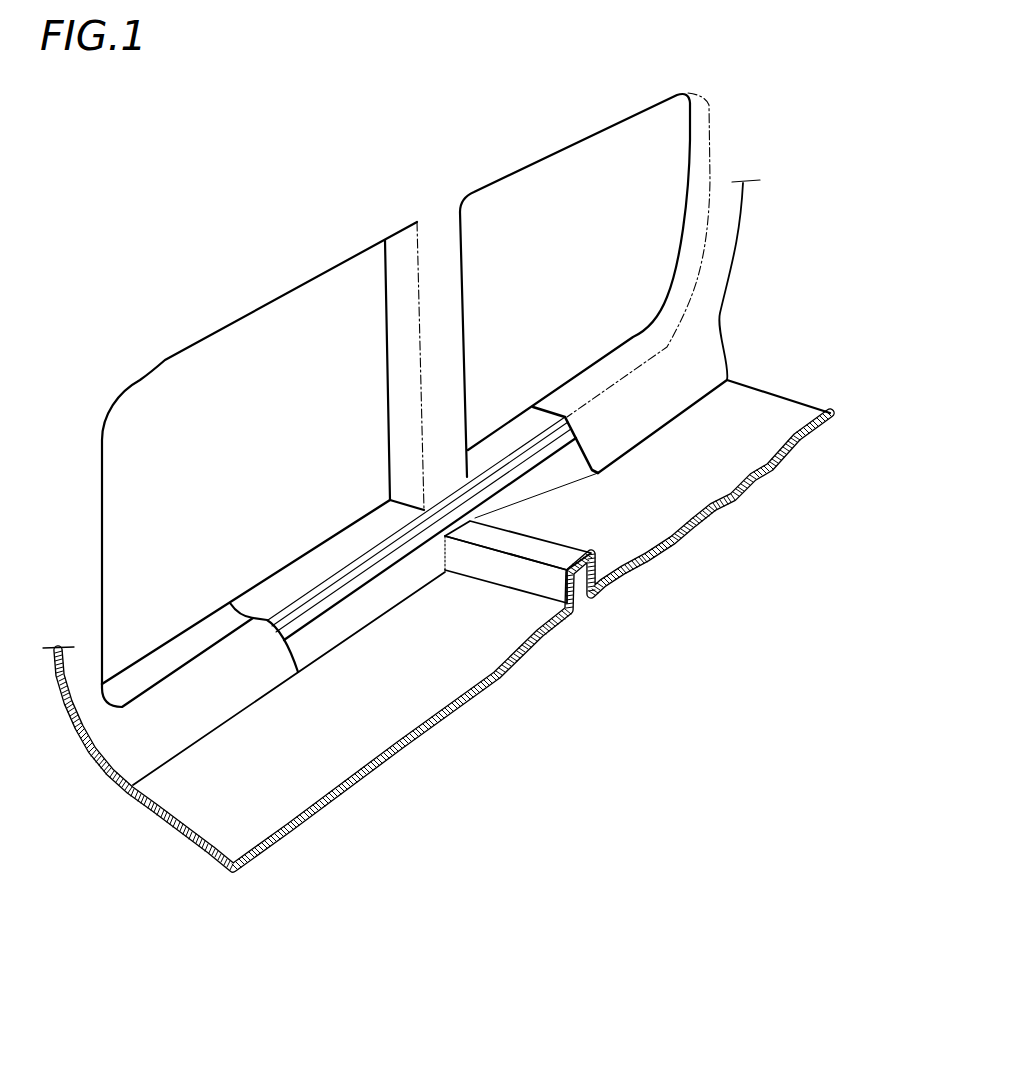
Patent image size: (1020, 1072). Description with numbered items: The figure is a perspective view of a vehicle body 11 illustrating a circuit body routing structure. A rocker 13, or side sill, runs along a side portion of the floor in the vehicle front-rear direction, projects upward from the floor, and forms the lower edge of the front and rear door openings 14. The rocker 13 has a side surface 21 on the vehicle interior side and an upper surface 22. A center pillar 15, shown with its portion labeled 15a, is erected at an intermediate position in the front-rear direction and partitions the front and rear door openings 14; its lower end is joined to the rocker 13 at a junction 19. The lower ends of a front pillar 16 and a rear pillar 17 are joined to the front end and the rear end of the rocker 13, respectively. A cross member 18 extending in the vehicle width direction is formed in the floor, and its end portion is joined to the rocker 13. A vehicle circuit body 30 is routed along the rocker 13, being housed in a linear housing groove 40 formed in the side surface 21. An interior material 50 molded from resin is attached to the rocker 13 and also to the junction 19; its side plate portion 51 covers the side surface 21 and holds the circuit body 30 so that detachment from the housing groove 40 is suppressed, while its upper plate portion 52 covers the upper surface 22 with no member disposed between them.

The vehicle body 11 is at (400, 800).
The rocker (side sill) 13 is at (367, 633).
The door openings 14 is at (515, 217).
The center pillar 15 is at (400, 290).
The side surface of seat back 15a is at (450, 382).
The front pillar 16 is at (106, 585).
The rear pillar 17 is at (720, 233).
The cross member 18 is at (530, 587).
The junction 19 is at (455, 477).
The side surface 21 is at (310, 655).
The upper surface 22 is at (275, 600).
The vehicle circuit body 30 is at (374, 540).
The housing groove 40 is at (410, 550).
The interior material 50 is at (690, 397).
The side plate portion 51 is at (240, 697).
The upper plate portion 52 is at (187, 657).